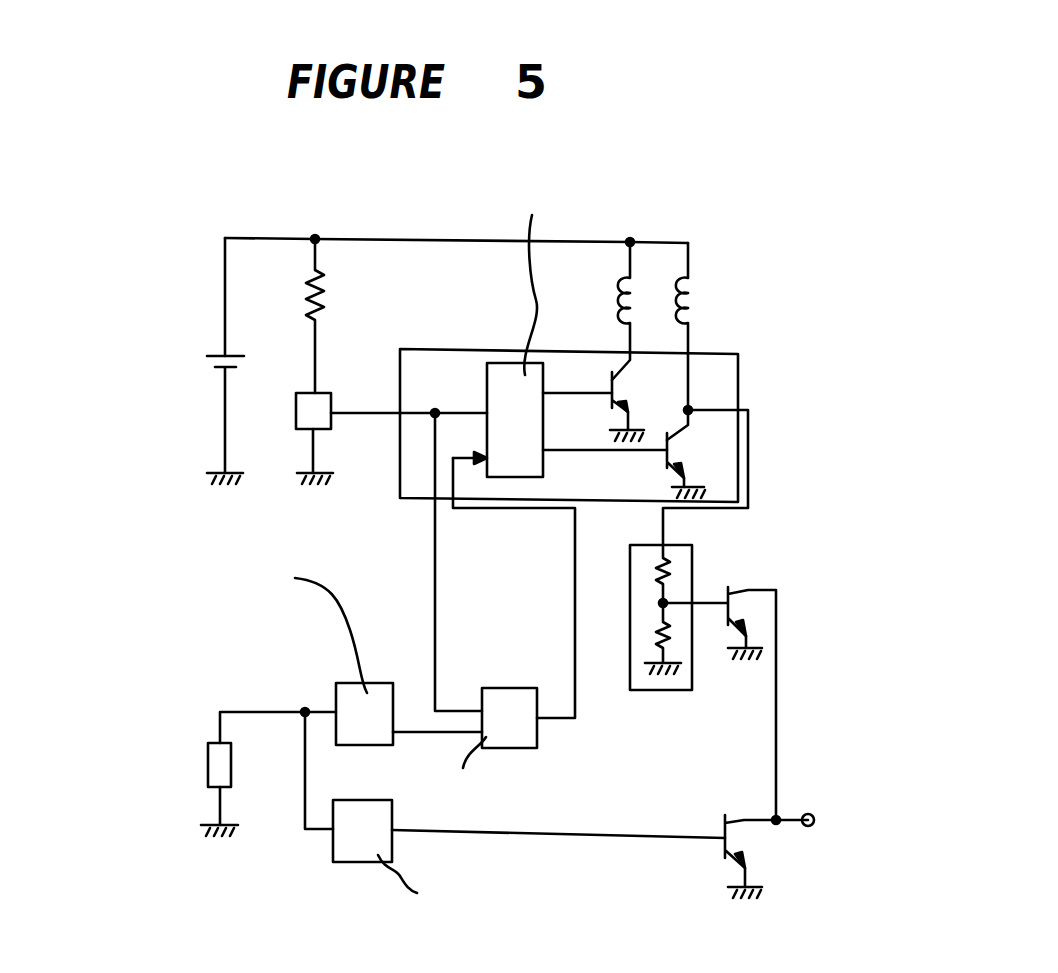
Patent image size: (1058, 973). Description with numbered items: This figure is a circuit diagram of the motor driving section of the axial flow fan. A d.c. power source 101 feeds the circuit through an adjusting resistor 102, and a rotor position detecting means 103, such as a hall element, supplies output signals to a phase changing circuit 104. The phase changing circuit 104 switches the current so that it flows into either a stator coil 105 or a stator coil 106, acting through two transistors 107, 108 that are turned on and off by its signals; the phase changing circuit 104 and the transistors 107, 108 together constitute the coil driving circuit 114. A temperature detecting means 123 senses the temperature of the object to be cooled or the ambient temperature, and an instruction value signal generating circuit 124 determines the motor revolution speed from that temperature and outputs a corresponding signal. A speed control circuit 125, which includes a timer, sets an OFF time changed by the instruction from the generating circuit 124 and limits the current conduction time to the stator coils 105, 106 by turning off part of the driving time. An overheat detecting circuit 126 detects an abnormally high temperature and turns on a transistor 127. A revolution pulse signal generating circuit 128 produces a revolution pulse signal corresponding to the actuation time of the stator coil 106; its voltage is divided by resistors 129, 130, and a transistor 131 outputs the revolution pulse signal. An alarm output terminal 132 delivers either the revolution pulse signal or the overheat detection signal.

The d.c. power source 101 is at (210, 362).
The adjusting resistor 102 is at (325, 302).
The rotor position detecting means 103 is at (322, 390).
The phase changing circuit 104 is at (510, 363).
The stator coil 105 is at (622, 306).
The stator coil 106 is at (703, 302).
The transistor 107 is at (655, 386).
The transistor 108 is at (684, 445).
The coil driving circuit 114 is at (738, 370).
The temperature detecting means 123 is at (208, 742).
The instruction value signal generating circuit 124 is at (347, 683).
The speed control circuit 125 is at (502, 688).
The overheat detecting circuit 126 is at (370, 800).
The transistor 127 is at (725, 820).
The revolution pulse signal generating circuit 128 is at (692, 568).
The resistor 129 is at (650, 565).
The resistor 130 is at (650, 632).
The transistor 131 is at (735, 632).
The alarm output terminal 132 is at (810, 813).